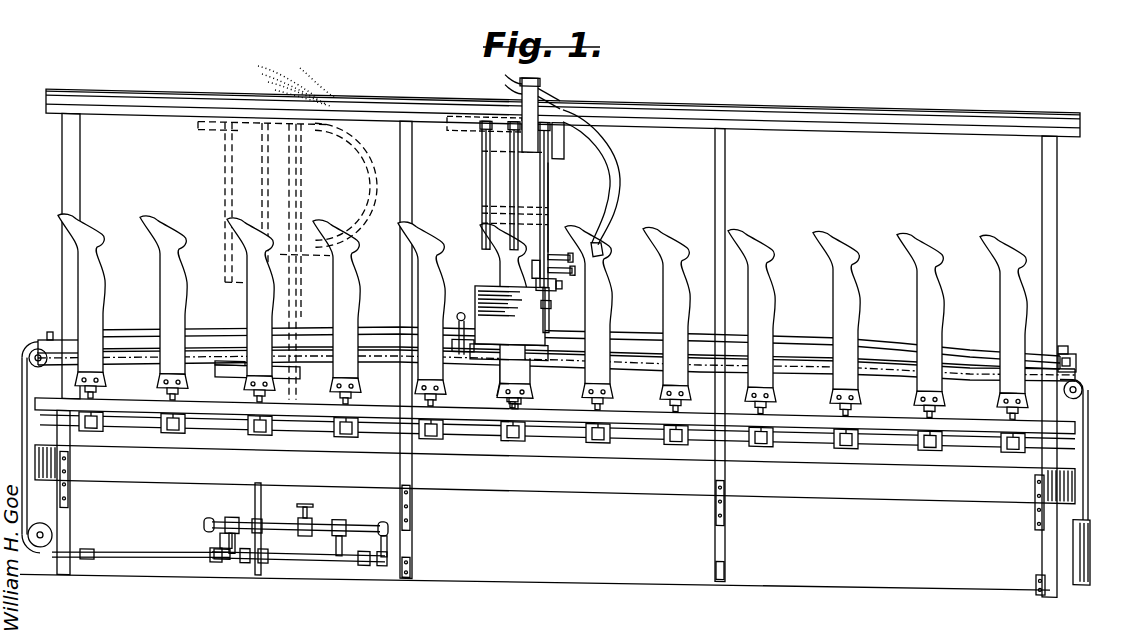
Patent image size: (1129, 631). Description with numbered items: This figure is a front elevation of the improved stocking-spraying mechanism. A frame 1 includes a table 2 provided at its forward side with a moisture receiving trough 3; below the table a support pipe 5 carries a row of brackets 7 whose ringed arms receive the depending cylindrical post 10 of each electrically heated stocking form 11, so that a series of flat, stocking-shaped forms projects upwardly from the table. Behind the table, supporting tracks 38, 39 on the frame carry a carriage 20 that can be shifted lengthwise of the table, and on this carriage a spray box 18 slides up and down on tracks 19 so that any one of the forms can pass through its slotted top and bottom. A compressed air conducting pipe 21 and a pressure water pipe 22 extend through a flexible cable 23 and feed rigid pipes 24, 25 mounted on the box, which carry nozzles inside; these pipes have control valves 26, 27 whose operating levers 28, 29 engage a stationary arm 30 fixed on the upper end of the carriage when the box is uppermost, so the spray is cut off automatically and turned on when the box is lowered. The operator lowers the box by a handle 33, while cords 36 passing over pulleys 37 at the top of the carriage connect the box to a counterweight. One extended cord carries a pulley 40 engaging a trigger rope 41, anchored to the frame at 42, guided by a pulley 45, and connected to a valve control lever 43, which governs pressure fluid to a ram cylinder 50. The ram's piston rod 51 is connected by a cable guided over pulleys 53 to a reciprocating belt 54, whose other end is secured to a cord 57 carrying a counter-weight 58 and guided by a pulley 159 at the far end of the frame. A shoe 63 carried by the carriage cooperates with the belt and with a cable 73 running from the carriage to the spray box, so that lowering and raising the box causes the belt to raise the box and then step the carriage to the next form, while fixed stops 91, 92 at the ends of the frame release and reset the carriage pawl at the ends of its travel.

The frame 1 is at (728, 531).
The table 2 is at (622, 401).
The moisture receiving trough 3 is at (910, 471).
The support pipe 5 is at (962, 419).
The bracket 7 is at (540, 424).
The cylindrical post 10 is at (766, 393).
The stocking form 11 is at (170, 266).
The spray box 18 is at (210, 298).
The tracks 19 is at (511, 186).
The carriage 20 is at (290, 188).
The compressed air conducting pipe 21 is at (540, 84).
The pressure water pipe 22 is at (510, 86).
The flexible cable 23 is at (627, 164).
The rigid air pipe 24 is at (545, 245).
The rigid water pipe 25 is at (575, 120).
The control valve 26 is at (555, 278).
The control valve 27 is at (528, 278).
The operating lever 28 is at (558, 267).
The operating lever 29 is at (540, 265).
The stationary arm 30 is at (598, 126).
The handle 33 is at (498, 338).
The cords 36 is at (505, 155).
The pulleys 37 is at (478, 132).
The supporting track 38 is at (877, 100).
The supporting track 39 is at (788, 348).
The pulley 40 is at (254, 383).
The trigger rope 41 is at (620, 345).
The anchor point 42 is at (1072, 362).
The valve control lever 43 is at (262, 492).
The guide pulley 45 is at (58, 339).
The ram cylinder 50 is at (318, 553).
The piston rod 51 is at (145, 549).
The pulleys 53 is at (42, 359).
The reciprocating belt 54 is at (126, 338).
The cord 57 is at (1086, 433).
The counter-weight 58 is at (1082, 565).
The shoe 63 is at (470, 347).
The cable 73 is at (549, 191).
The fixed stop 91 is at (1062, 350).
The fixed stop 92 is at (46, 340).
The pulley 159 is at (1086, 373).